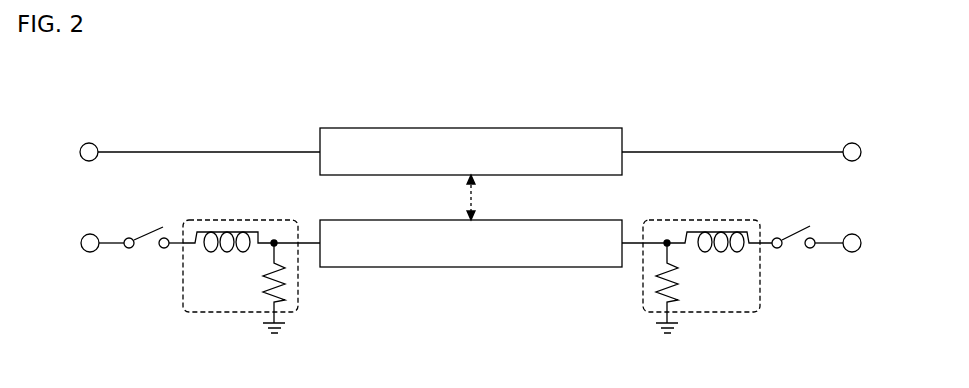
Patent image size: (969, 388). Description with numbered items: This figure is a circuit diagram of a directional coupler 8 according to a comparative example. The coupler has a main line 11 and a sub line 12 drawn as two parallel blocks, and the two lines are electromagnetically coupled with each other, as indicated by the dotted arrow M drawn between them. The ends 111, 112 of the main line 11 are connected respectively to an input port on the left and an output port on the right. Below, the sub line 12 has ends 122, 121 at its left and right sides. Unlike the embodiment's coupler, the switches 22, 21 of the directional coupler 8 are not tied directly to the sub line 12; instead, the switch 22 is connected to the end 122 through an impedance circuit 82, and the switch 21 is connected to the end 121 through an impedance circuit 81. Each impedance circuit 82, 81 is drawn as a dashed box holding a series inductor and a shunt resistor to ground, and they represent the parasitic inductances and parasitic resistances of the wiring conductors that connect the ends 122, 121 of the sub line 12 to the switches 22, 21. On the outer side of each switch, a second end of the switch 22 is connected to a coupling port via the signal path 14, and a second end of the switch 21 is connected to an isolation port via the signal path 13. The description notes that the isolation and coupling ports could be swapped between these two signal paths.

The directional coupler 8 is at (818, 80).
The main line 11 is at (425, 128).
The end of the main line 111 is at (318, 150).
The end of the main line 112 is at (625, 150).
The sub line 12 is at (425, 220).
The end of the sub line 122 is at (318, 241).
The end of the sub line 121 is at (624, 243).
The dotted arrow M is at (476, 200).
The impedance circuit 82 is at (262, 222).
The impedance circuit 81 is at (683, 220).
The switch 22 is at (148, 236).
The switch 21 is at (790, 235).
The signal path 14 is at (108, 246).
The signal path 13 is at (830, 246).